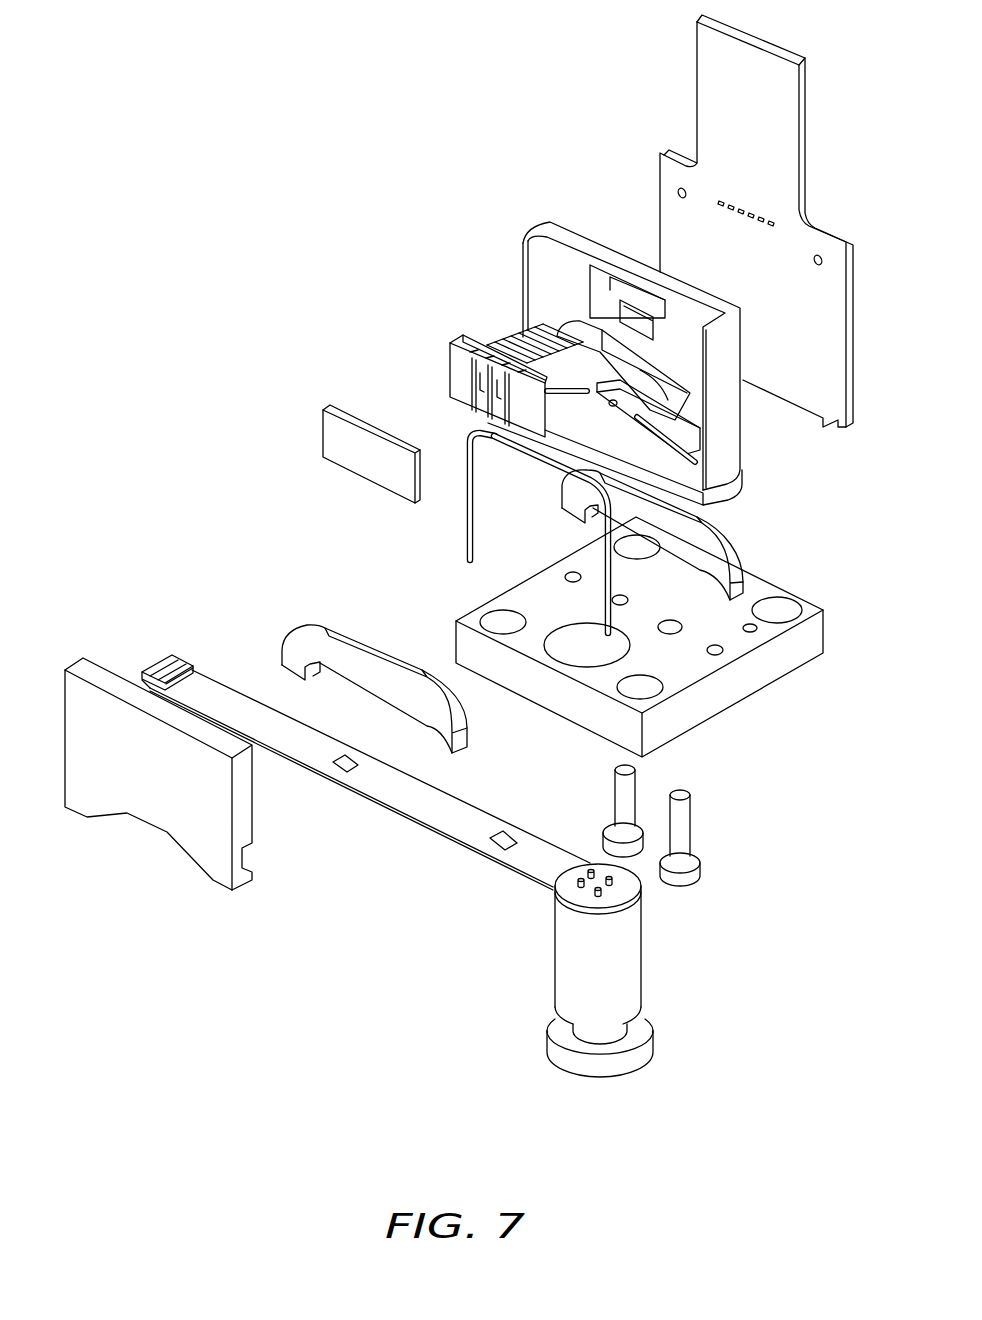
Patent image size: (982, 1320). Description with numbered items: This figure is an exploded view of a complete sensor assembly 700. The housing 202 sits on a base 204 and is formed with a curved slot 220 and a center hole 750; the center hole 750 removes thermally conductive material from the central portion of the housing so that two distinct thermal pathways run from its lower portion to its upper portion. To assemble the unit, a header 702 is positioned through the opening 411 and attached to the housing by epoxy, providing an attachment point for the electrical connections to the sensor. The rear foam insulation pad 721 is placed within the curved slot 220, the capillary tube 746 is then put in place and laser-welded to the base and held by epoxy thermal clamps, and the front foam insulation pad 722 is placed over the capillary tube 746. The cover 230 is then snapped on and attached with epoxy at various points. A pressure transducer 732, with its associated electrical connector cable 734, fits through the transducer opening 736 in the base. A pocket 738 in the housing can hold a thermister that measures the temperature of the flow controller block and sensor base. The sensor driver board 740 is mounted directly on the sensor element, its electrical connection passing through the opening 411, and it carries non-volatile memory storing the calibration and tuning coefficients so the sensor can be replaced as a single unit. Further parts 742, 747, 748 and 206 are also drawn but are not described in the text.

The sensor assembly 700 is at (160, 175).
The sensor driver board 740 is at (750, 58).
The pocket 738 is at (625, 298).
The housing 202 is at (540, 228).
The curved slot 220 is at (565, 318).
The opening 411 is at (657, 297).
The ribbon cable 742 is at (520, 330).
The header 702 is at (452, 342).
The center hole 750 is at (640, 397).
The spring wire 747 is at (482, 430).
The wire lead 748 is at (555, 470).
The capillary tube 746 is at (466, 528).
The back foam insulation pad 721 is at (722, 540).
The transducer opening 736 is at (562, 642).
The base plate 204 is at (820, 635).
The front foam insulation pad 722 is at (295, 635).
The fastener pins 206 is at (688, 812).
The electrical connector cable 734 is at (400, 797).
The cover 230 is at (160, 805).
The pressure transducer 732 is at (627, 976).